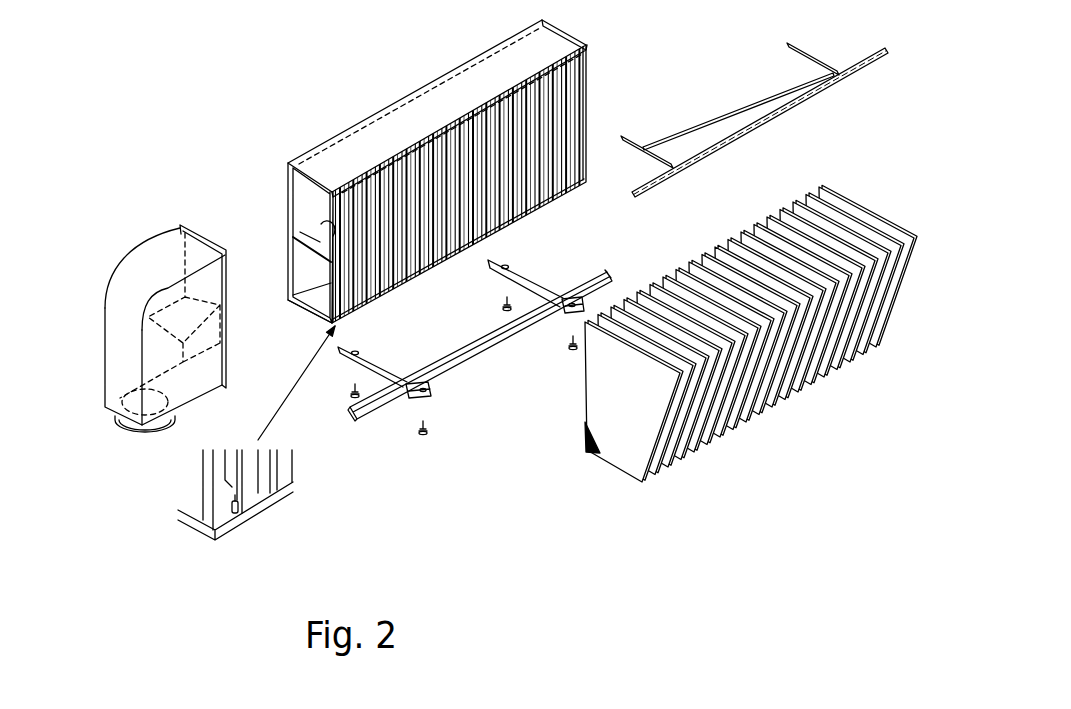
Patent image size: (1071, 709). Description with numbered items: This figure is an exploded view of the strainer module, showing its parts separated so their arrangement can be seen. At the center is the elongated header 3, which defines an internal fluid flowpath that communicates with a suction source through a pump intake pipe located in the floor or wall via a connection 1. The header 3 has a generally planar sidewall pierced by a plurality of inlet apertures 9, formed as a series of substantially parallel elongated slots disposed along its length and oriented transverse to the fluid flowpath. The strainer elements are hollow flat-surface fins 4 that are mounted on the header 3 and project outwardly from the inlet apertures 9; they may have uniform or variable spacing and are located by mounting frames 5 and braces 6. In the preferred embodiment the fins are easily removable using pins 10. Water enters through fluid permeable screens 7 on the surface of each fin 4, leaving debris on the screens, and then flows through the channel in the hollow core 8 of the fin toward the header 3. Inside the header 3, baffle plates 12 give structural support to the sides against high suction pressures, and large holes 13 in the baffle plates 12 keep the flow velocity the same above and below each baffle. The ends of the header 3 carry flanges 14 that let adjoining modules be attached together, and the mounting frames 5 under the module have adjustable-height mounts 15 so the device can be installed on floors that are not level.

The connection 1 is at (132, 280).
The header 3 is at (407, 193).
The fins 4 is at (730, 364).
The mounting frames 5 is at (592, 277).
The braces 6 is at (827, 95).
The fluid permeable screens 7 is at (637, 440).
The hollow core 8 is at (584, 450).
The inlet apertures 9 is at (395, 225).
The pins 10 is at (240, 513).
The baffle plates 12 is at (322, 235).
The large holes 13 is at (310, 238).
The flanges 14 is at (308, 312).
The adjustable-height mounts 15 is at (427, 423).